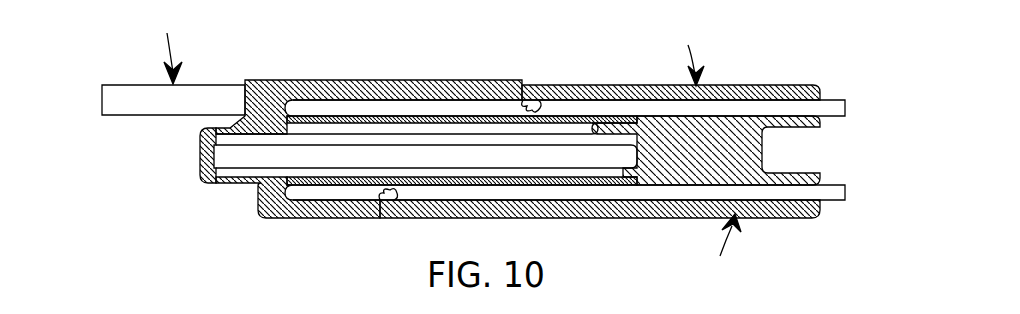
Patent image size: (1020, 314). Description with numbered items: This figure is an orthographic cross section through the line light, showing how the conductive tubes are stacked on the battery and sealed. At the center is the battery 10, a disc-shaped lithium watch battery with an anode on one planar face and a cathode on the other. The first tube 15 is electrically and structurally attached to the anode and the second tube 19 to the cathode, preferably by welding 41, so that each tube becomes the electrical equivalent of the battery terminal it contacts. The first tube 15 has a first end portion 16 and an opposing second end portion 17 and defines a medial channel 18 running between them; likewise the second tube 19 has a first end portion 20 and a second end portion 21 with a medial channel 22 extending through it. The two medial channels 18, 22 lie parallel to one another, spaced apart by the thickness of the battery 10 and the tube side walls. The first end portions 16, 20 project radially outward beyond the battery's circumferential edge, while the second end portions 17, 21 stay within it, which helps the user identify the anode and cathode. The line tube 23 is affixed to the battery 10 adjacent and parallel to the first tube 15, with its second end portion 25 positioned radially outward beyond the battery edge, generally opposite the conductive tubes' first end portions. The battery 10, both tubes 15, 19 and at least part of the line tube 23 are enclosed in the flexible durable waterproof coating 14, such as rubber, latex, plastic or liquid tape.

The battery 10 is at (611, 120).
The waterproof coating 14 is at (660, 218).
The first tube 15 is at (671, 57).
The first end portion 16 is at (840, 114).
The second end portion 17 is at (304, 80).
The medial channel 18 is at (528, 106).
The second tube 19 is at (600, 242).
The first end portion 20 is at (834, 188).
The second end portion 21 is at (297, 217).
The medial channel 22 is at (392, 201).
The line tube 23 is at (166, 45).
The second end portion 25 is at (112, 97).
The welding 41 is at (413, 123).